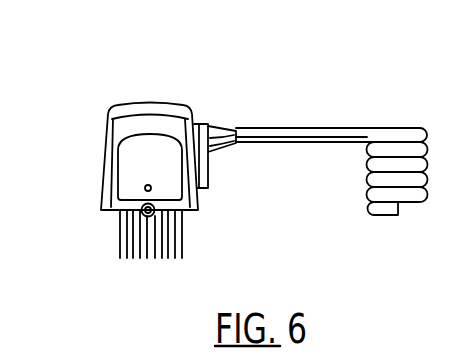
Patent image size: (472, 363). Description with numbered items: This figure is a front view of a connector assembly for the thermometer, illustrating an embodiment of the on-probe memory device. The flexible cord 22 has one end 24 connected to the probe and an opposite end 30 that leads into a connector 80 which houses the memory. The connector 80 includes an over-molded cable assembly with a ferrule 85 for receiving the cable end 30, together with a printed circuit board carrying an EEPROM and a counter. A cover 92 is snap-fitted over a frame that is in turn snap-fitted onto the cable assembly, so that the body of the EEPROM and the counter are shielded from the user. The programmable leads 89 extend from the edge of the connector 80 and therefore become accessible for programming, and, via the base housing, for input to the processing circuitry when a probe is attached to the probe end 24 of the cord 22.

The connector 80 is at (160, 77).
The cover 92 is at (106, 133).
The programmable leads 89 is at (120, 240).
The ferrule 85 is at (217, 125).
The flexible cord 22 is at (307, 126).
The opposite end 30 is at (252, 140).
The probe end 24 is at (386, 207).